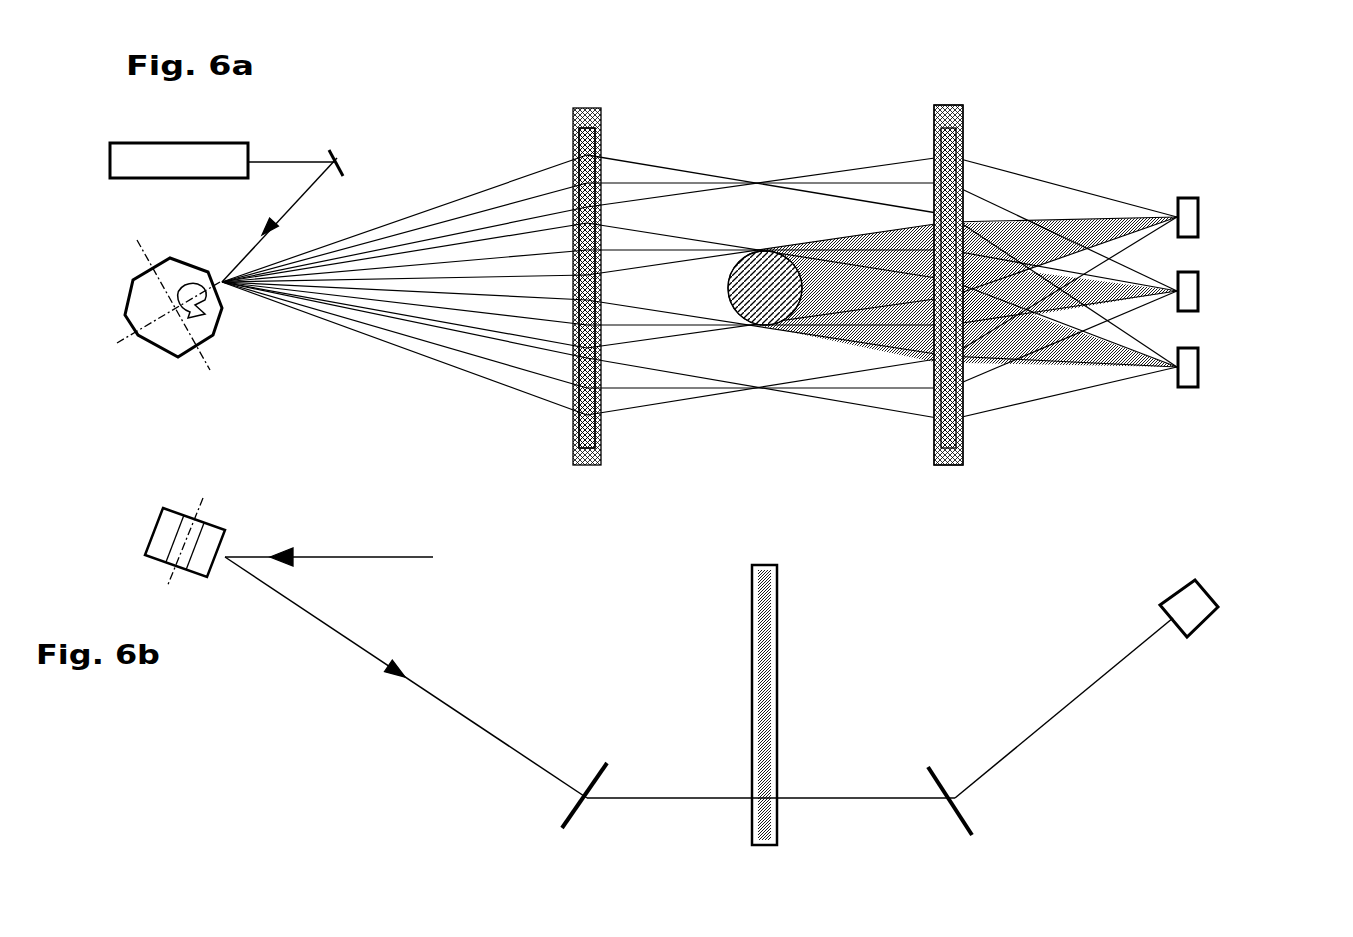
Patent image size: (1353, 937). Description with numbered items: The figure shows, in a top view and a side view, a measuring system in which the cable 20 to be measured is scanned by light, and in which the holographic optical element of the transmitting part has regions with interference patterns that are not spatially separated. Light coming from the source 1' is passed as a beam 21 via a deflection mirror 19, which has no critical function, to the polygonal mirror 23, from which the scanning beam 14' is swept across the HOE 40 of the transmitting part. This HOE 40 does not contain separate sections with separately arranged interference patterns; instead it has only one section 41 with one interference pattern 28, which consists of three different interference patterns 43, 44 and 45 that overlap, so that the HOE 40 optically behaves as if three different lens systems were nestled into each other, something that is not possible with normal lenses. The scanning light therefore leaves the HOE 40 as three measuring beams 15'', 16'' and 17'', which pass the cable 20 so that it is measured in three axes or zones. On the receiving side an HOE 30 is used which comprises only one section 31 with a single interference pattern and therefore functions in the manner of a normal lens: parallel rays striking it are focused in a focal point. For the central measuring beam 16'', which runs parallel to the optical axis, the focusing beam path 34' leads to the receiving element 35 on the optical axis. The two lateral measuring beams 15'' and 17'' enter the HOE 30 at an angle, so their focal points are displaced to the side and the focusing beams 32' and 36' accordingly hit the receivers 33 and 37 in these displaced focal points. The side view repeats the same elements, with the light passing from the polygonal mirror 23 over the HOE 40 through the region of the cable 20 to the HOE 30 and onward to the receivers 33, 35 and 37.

In FIG. 6A, the light source 1' is at (210, 130).
In FIG. 6A, the deflection mirror 19 is at (340, 160).
In FIG. 6A, the light beam 21 is at (258, 242).
In FIG. 6B, the light beam 21 is at (310, 556).
In FIG. 6A, the polygonal mirror 23 is at (175, 352).
In FIG. 6B, the polygonal mirror 23 is at (200, 508).
In FIG. 6A, the scanning beam 14' is at (404, 285).
In FIG. 6B, the scanning beam 14' is at (406, 677).
In FIG. 6A, the interference pattern 28 is at (620, 155).
In FIG. 6A, the measuring beam 15'' is at (768, 262).
In FIG. 6B, the measuring beam 15'' is at (772, 849).
In FIG. 6A, the central measuring beam 16'' is at (768, 262).
In FIG. 6B, the central measuring beam 16'' is at (772, 849).
In FIG. 6A, the measuring beam 17'' is at (768, 262).
In FIG. 6B, the measuring beam 17'' is at (772, 849).
In FIG. 6A, the HOE 40 is at (503, 255).
In FIG. 6B, the HOE 40 is at (557, 739).
In FIG. 6A, the lens element 41 is at (545, 270).
In FIG. 6B, the lens element 41 is at (592, 782).
In FIG. 6A, the interference pattern 43 is at (635, 332).
In FIG. 6A, the interference pattern 44 is at (635, 332).
In FIG. 6A, the interference pattern 45 is at (602, 375).
In FIG. 6A, the cable 20 is at (770, 326).
In FIG. 6B, the cable 20 is at (778, 670).
In FIG. 6A, the HOE 30 is at (1040, 275).
In FIG. 6B, the HOE 30 is at (976, 746).
In FIG. 6A, the section 31 is at (1023, 310).
In FIG. 6B, the section 31 is at (945, 778).
In FIG. 6A, the focusing beam 32' is at (1007, 270).
In FIG. 6B, the focusing beam 32' is at (1127, 717).
In FIG. 6A, the focusing beam path 34' is at (1007, 270).
In FIG. 6B, the focusing beam path 34' is at (1127, 717).
In FIG. 6A, the focusing beam 36' is at (1007, 270).
In FIG. 6B, the focusing beam 36' is at (1127, 717).
In FIG. 6A, the receiver 33 is at (1200, 218).
In FIG. 6B, the receiver 33 is at (1245, 591).
In FIG. 6A, the receiving element 35 is at (1200, 292).
In FIG. 6B, the receiving element 35 is at (1245, 591).
In FIG. 6A, the receiver 37 is at (1200, 367).
In FIG. 6B, the receiver 37 is at (1285, 584).